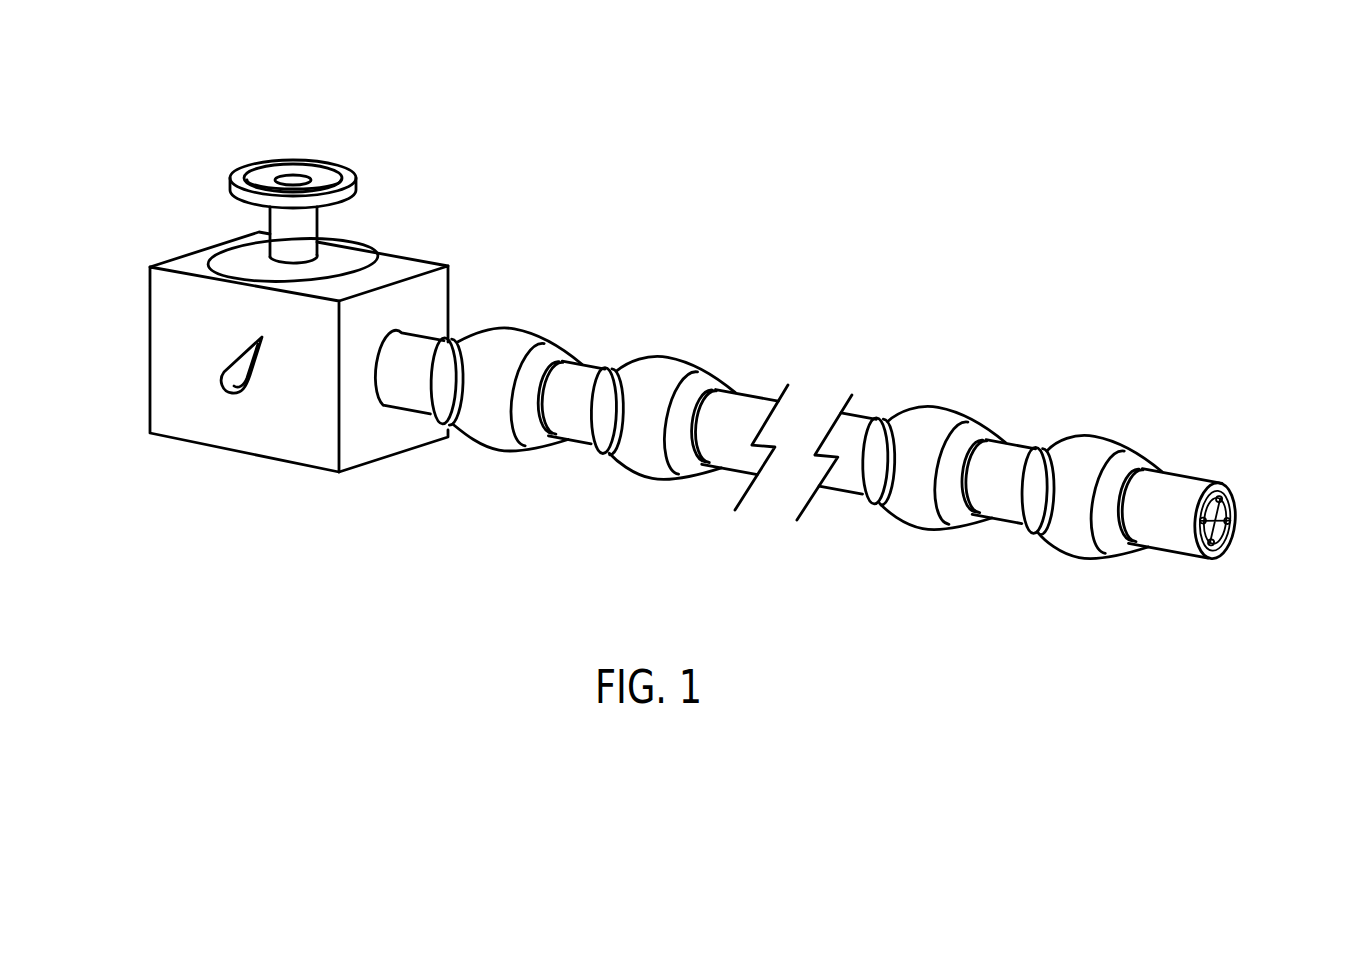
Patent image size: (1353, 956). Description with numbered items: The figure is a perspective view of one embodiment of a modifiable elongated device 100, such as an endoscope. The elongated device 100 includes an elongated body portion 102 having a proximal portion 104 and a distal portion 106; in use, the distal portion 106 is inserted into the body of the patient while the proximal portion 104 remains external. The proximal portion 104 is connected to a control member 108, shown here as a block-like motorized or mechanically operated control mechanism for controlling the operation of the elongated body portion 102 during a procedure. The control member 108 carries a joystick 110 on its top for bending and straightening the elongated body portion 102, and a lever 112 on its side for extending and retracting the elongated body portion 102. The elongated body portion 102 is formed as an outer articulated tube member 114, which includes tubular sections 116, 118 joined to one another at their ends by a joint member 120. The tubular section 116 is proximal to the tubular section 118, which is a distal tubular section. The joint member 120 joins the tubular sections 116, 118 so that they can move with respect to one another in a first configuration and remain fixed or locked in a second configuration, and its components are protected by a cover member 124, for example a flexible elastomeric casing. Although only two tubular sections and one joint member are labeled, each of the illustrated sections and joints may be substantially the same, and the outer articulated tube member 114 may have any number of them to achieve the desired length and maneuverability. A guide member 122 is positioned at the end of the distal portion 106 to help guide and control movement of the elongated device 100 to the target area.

The elongated device 100 is at (993, 240).
The elongated body portion 102 is at (697, 342).
The proximal portion 104 is at (672, 530).
The distal portion 106 is at (1048, 495).
The control member 108 is at (288, 286).
The joystick 110 is at (243, 176).
The lever 112 is at (228, 376).
The outer articulated tube member 114 is at (1027, 445).
The tubular section 116 is at (852, 492).
The tubular section 118 is at (1012, 522).
The joint member 120 is at (940, 461).
The guide member 122 is at (1225, 482).
The cover member 124 is at (927, 522).